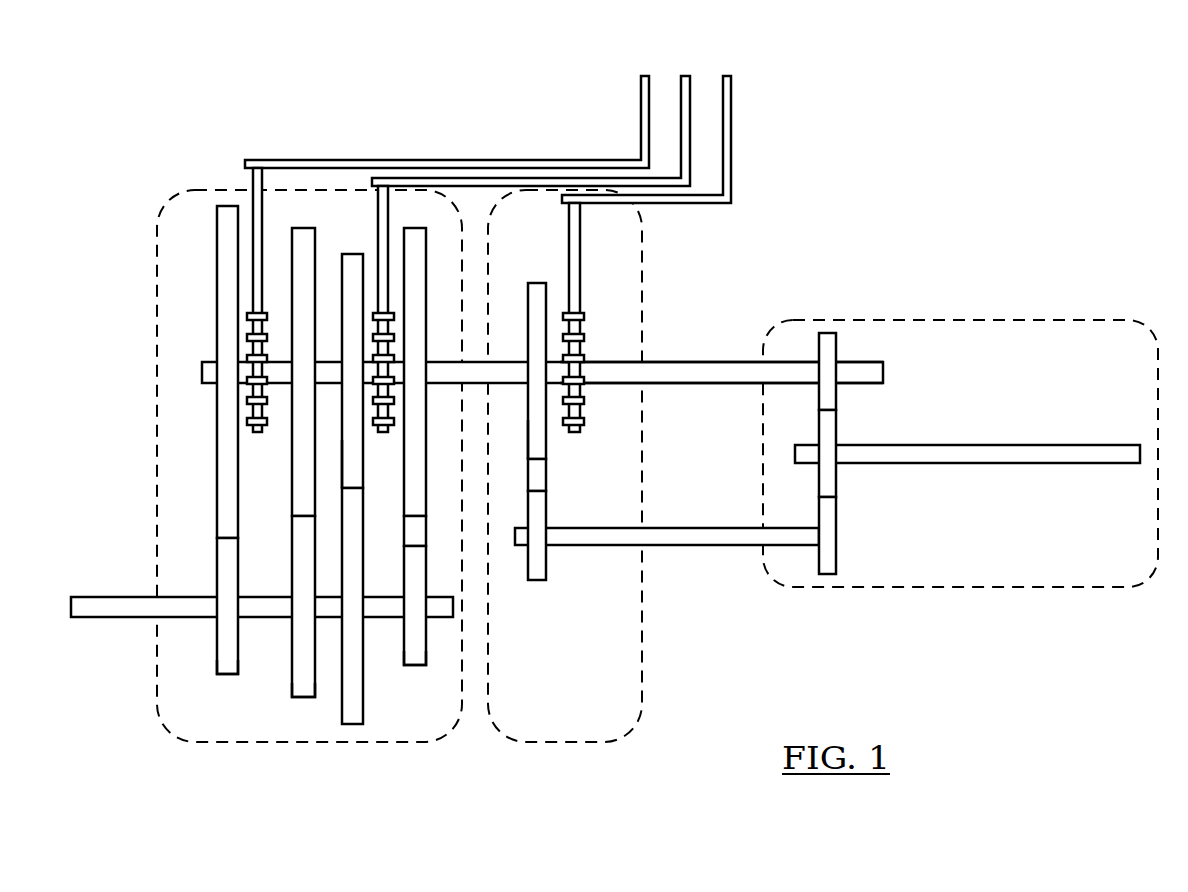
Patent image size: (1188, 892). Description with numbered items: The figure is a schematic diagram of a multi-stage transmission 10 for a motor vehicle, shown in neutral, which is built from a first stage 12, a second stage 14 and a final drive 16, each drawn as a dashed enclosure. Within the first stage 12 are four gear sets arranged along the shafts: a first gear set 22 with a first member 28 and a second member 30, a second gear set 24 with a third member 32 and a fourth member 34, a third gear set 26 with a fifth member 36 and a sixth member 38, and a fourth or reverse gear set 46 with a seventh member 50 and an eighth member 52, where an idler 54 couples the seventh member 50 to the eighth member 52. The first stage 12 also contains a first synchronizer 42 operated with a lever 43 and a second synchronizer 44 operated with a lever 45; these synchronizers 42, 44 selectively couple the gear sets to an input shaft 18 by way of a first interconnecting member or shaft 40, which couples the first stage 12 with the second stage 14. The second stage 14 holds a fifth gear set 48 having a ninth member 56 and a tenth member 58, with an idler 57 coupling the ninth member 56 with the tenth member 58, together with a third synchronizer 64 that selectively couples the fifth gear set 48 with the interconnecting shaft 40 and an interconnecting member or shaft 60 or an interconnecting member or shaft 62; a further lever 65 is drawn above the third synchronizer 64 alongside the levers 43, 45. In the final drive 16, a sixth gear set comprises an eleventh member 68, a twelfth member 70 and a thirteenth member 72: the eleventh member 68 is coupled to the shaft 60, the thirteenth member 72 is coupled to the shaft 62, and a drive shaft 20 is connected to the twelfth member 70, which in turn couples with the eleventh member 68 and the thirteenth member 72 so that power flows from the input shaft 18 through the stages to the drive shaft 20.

The multi-stage transmission 10 is at (916, 160).
The first stage 12 is at (317, 742).
The second stage 14 is at (570, 742).
The final drive 16 is at (915, 590).
The input shaft 18 is at (105, 617).
The drive shaft 20 is at (965, 445).
The first gear set 22 is at (216, 265).
The second gear set 24 is at (305, 228).
The third gear set 26 is at (352, 254).
The first member 28 is at (216, 484).
The second member 30 is at (228, 674).
The third member 32 is at (292, 493).
The fourth member 34 is at (303, 697).
The fifth member 36 is at (342, 455).
The sixth member 38 is at (355, 724).
The first interconnecting member or shaft 40 is at (202, 372).
The first synchronizer 42 is at (253, 290).
The lever 43 is at (641, 100).
The second synchronizer 44 is at (383, 437).
The lever 45 is at (681, 100).
The fourth (or reverse) gear set 46 is at (415, 228).
The fifth gear set 48 is at (536, 283).
The seventh member 50 is at (426, 432).
The eighth member 52 is at (416, 665).
The idler 54 is at (426, 527).
The ninth member 56 is at (528, 432).
The idler 57 is at (546, 472).
The tenth member 58 is at (546, 567).
The interconnecting member or shaft 60 is at (690, 362).
The interconnecting member or shaft 62 is at (703, 545).
The third synchronizer 64 is at (580, 303).
The clutch actuator line 65 is at (731, 100).
The eleventh member 68 is at (826, 333).
The twelfth member 70 is at (819, 425).
The thirteenth member 72 is at (828, 574).